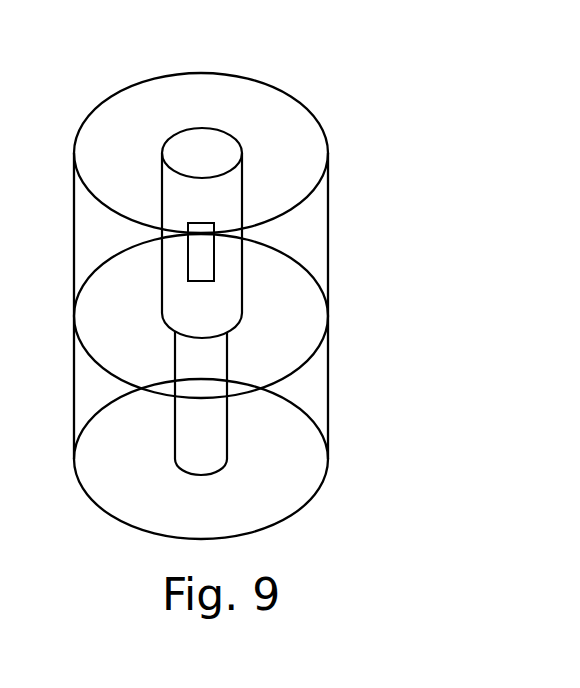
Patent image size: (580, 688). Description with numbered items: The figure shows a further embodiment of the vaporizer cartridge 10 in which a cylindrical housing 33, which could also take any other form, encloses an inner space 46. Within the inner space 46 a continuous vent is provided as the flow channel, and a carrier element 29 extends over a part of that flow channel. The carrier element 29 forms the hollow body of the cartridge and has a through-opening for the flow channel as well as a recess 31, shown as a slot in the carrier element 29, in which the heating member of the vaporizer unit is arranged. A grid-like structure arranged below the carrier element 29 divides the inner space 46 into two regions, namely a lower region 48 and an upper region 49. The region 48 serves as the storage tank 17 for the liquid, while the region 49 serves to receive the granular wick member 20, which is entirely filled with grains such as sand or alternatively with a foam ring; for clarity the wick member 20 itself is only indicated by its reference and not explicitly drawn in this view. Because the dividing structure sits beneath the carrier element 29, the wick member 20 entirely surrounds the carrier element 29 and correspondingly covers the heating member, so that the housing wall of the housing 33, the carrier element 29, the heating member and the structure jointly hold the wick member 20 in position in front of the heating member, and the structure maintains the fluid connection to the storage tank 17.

The vaporizer cartridge 10 is at (227, 277).
The cylindrical housing 33 is at (348, 187).
The region 49 is at (297, 228).
The carrier element 29 is at (213, 246).
The recess 31 is at (200, 242).
The region 48 is at (308, 385).
The inner space 46 is at (311, 403).
The wick member 20 is at (110, 243).
The storage tank 17 is at (108, 403).